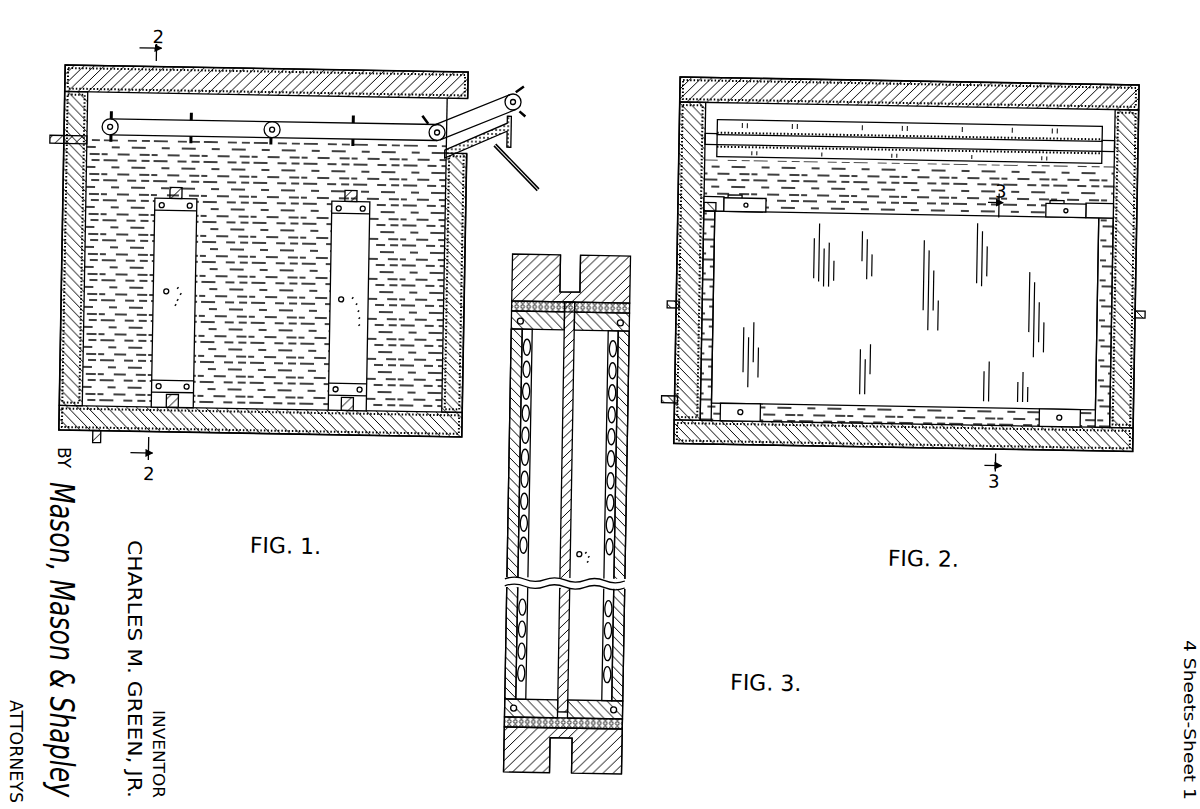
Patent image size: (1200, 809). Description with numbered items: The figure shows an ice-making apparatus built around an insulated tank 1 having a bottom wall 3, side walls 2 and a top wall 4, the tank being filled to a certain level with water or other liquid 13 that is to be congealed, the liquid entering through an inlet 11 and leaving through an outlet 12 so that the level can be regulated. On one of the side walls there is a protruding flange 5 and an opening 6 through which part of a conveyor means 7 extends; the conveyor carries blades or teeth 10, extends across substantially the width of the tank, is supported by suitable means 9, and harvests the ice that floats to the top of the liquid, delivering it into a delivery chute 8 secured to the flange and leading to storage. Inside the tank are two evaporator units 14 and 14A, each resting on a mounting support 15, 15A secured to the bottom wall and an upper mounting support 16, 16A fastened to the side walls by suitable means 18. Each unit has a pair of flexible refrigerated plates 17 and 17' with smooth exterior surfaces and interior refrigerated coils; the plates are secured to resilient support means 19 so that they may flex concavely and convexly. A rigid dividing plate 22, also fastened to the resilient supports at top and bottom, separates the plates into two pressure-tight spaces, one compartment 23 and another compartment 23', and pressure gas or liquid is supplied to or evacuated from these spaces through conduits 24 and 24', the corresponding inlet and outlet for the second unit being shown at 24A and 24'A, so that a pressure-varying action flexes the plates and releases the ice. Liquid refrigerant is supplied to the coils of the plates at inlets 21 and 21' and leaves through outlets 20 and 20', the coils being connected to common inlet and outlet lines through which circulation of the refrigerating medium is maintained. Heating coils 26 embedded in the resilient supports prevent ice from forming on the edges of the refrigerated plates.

In FIG. 1, the insulated tank 1 is at (260, 68).
In FIG. 2, the insulated tank 1 is at (837, 79).
In FIG. 1, the side walls 2 is at (62, 292).
In FIG. 2, the side walls 2 is at (678, 244).
In FIG. 1, the bottom wall 3 is at (243, 434).
In FIG. 2, the bottom wall 3 is at (840, 450).
In FIG. 1, the top wall 4 is at (372, 68).
In FIG. 2, the top wall 4 is at (1033, 82).
In FIG. 1, the protruding flange 5 is at (471, 148).
In FIG. 1, the opening 6 is at (456, 102).
In FIG. 1, the conveyor means 7 is at (357, 121).
In FIG. 2, the conveyor means 7 is at (779, 134).
In FIG. 1, the delivery chute 8 is at (520, 163).
In FIG. 2, the conveyor support 9 is at (703, 145).
In FIG. 1, the blades or teeth 10 is at (191, 119).
In FIG. 2, the blades or teeth 10 is at (930, 158).
In FIG. 1, the liquid inlet 11 is at (62, 145).
In FIG. 1, the liquid outlet 12 is at (103, 434).
In FIG. 1, the liquid 13 is at (101, 226).
In FIG. 2, the liquid 13 is at (722, 176).
In FIG. 1, the evaporator unit 14 is at (183, 338).
In FIG. 2, the evaporator unit 14 is at (1097, 348).
In FIG. 3, the evaporator unit 14 is at (628, 575).
In FIG. 1, the second evaporator unit 14A is at (339, 326).
In FIG. 1, the mounting support 15 is at (181, 434).
In FIG. 2, the mounting support 15 is at (758, 425).
In FIG. 3, the mounting support 15 is at (627, 745).
In FIG. 1, the mounting support 15A is at (360, 414).
In FIG. 1, the mounting support 16 is at (184, 198).
In FIG. 2, the mounting support 16 is at (757, 215).
In FIG. 3, the mounting support 16 is at (602, 262).
In FIG. 1, the mounting support 16A is at (360, 195).
In FIG. 3, the flexible refrigerated plate 17 is at (498, 513).
In FIG. 2, the flexible refrigerated plate 17' is at (915, 437).
In FIG. 3, the flexible refrigerated plate 17' is at (638, 516).
In FIG. 2, the fastening means 18 is at (710, 206).
In FIG. 3, the resilient support means 19 is at (510, 312).
In FIG. 2, the refrigerant outlet 20 is at (678, 214).
In FIG. 3, the refrigerant outlet 20 is at (523, 323).
In FIG. 3, the refrigerant outlet 20' is at (622, 327).
In FIG. 2, the refrigerant inlet 21 is at (660, 387).
In FIG. 3, the refrigerant inlet 21 is at (510, 704).
In FIG. 3, the refrigerant inlet 21' is at (618, 706).
In FIG. 3, the rigid dividing plate 22 is at (573, 520).
In FIG. 3, the pressure-tight space 23 is at (503, 513).
In FIG. 3, the pressure-tight compartment 23' is at (645, 516).
In FIG. 1, the conduit 24 is at (169, 280).
In FIG. 2, the conduit 24 is at (661, 294).
In FIG. 1, the conduit 24' is at (172, 307).
In FIG. 2, the conduit 24' is at (1159, 302).
In FIG. 3, the conduit 24' is at (591, 545).
In FIG. 1, the pressure inlet and outlet 24A is at (351, 286).
In FIG. 1, the pressure inlet and outlet 24'A is at (351, 324).
In FIG. 3, the heating coils 26 is at (567, 290).